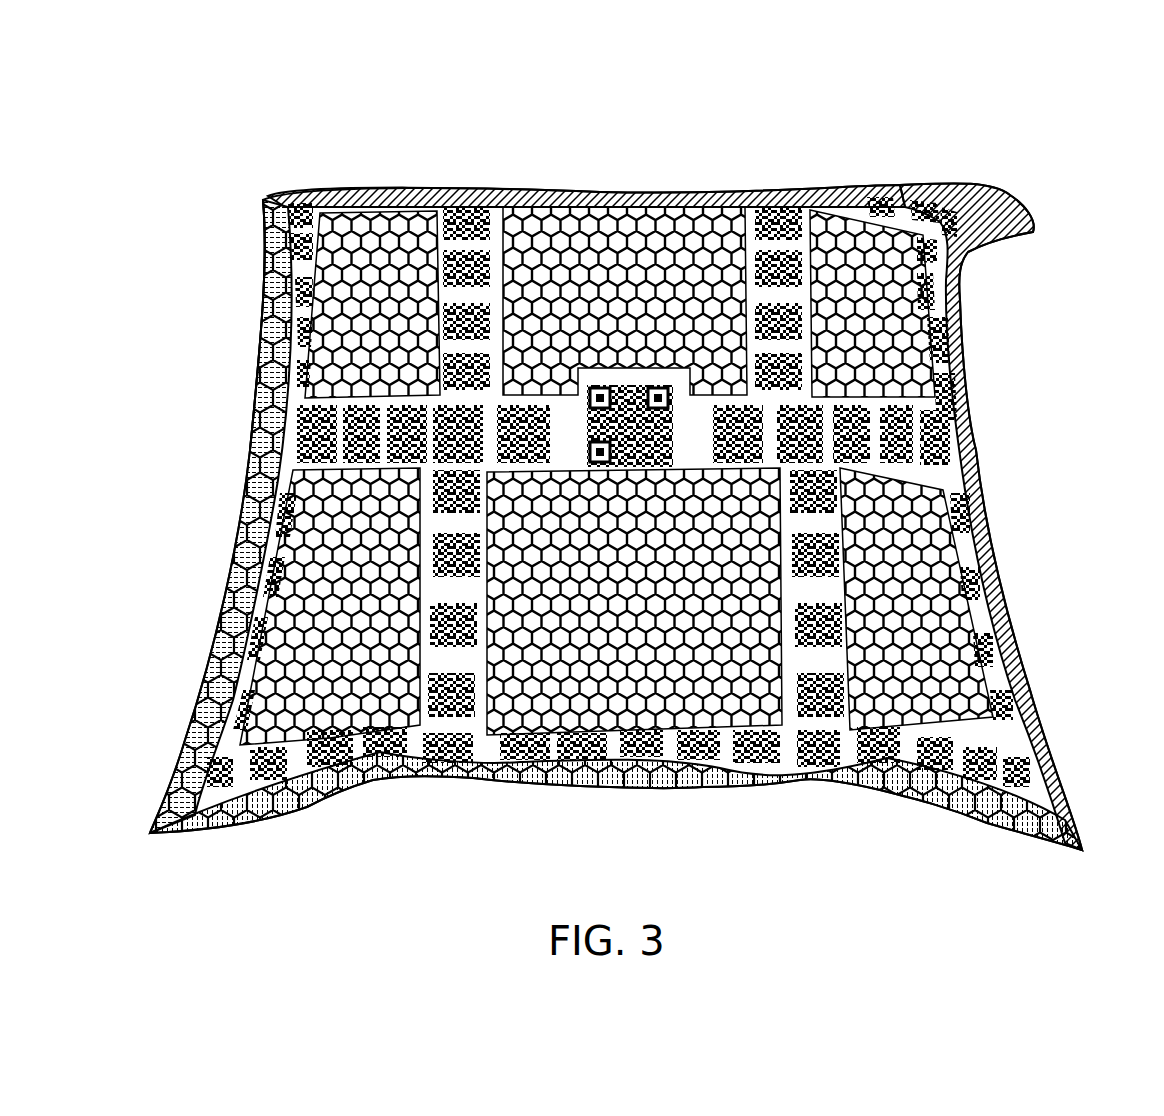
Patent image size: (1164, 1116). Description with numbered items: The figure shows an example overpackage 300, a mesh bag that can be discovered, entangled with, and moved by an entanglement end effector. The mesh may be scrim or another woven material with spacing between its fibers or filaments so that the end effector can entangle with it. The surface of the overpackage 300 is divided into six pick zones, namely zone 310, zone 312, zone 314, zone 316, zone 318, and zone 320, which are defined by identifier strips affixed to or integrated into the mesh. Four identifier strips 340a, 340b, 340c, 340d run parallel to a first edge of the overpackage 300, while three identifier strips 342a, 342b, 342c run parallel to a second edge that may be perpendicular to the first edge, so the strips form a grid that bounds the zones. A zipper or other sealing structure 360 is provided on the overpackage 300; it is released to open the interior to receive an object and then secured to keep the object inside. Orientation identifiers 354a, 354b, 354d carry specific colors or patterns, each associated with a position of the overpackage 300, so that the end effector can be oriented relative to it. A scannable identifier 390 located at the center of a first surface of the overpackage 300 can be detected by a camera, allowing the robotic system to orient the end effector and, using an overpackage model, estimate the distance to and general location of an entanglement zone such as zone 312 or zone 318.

The overpackage 300 is at (1098, 155).
The zone 310 is at (400, 305).
The zone 312 is at (645, 291).
The zone 314 is at (890, 316).
The zone 316 is at (368, 606).
The zone 318 is at (656, 616).
The zone 320 is at (923, 617).
The identifier strip 340a is at (257, 350).
The identifier strip 340b is at (430, 500).
The identifier strip 340c is at (807, 520).
The identifier strip 340d is at (962, 542).
The identifier strip 342a is at (897, 207).
The identifier strip 342b is at (520, 410).
The identifier strip 342c is at (543, 747).
The orientation identifier 354a is at (263, 303).
The orientation identifier 354b is at (332, 191).
The orientation identifier 354d is at (690, 773).
The sealing structure 360 is at (1013, 228).
The scannable identifier 390 is at (627, 390).